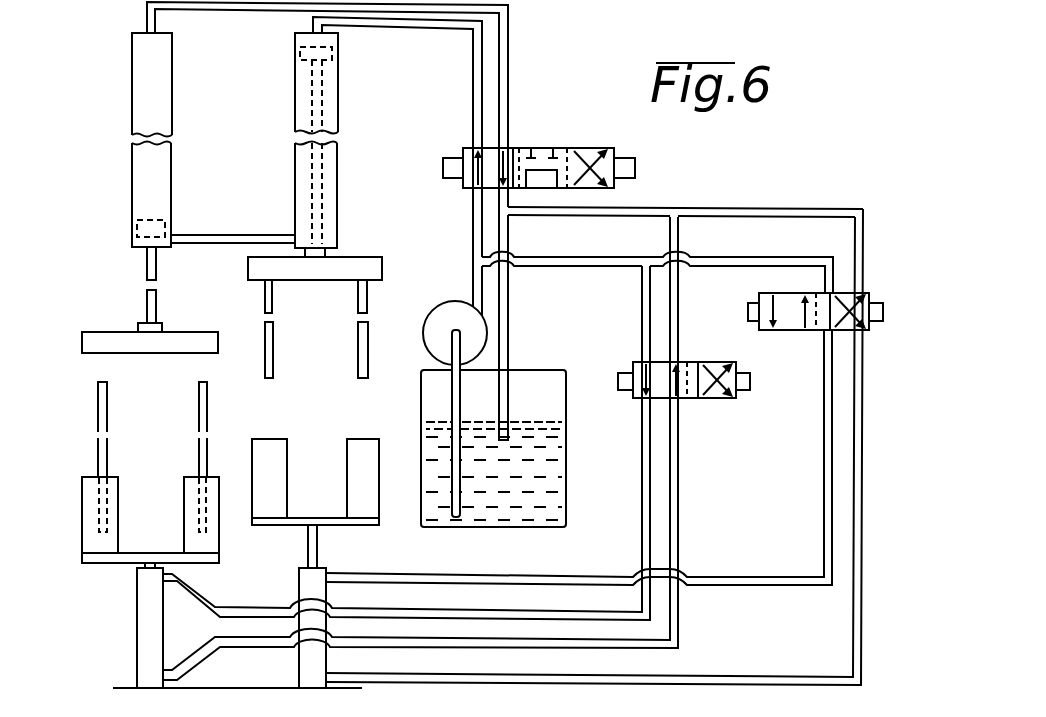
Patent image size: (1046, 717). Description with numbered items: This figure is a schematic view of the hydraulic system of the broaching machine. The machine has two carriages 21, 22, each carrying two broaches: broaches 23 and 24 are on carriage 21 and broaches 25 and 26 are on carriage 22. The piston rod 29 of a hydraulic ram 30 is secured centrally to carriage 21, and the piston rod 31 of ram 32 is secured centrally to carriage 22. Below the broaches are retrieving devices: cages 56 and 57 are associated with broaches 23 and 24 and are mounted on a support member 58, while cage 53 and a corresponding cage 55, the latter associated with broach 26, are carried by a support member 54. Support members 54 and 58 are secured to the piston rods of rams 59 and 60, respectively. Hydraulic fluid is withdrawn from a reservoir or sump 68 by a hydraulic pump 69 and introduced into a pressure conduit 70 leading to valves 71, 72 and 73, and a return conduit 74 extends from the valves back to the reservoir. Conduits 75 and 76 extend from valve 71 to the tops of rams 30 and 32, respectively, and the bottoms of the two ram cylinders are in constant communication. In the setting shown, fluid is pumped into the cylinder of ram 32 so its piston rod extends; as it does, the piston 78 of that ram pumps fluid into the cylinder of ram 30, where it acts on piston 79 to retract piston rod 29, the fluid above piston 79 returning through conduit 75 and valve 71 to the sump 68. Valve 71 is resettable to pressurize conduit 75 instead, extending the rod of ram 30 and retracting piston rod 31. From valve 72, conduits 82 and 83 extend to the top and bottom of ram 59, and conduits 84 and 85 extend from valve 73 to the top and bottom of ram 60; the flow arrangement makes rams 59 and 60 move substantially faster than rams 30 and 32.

The carriage 21 is at (86, 342).
The carriage 22 is at (370, 262).
The broach 23 is at (98, 425).
The broach 24 is at (199, 425).
The broach 25 is at (273, 300).
The broach 26 is at (357, 307).
The piston rod 29 is at (147, 273).
The hydraulic ram 30 is at (135, 120).
The piston rod 31 is at (310, 190).
The ram 32 is at (336, 128).
The cage 53 is at (281, 452).
The support member 54 is at (341, 524).
The cage 55 is at (364, 452).
The cage 56 is at (82, 522).
The cage 57 is at (184, 502).
The support member 58 is at (120, 558).
The ram 59 is at (303, 592).
The ram 60 is at (148, 637).
The reservoir or sump 68 is at (532, 378).
The hydraulic pump 69 is at (442, 312).
The pressure conduit 70 is at (592, 265).
The valve 71 is at (568, 140).
The valve 72 is at (697, 408).
The valve 73 is at (808, 340).
The return conduit 74 is at (655, 210).
The conduit 75 is at (510, 77).
The conduit 76 is at (473, 88).
The piston 78 is at (299, 53).
The piston 79 is at (134, 219).
The conduit 82 is at (642, 505).
The conduit 83 is at (678, 505).
The conduit 84 is at (823, 442).
The conduit 85 is at (863, 430).